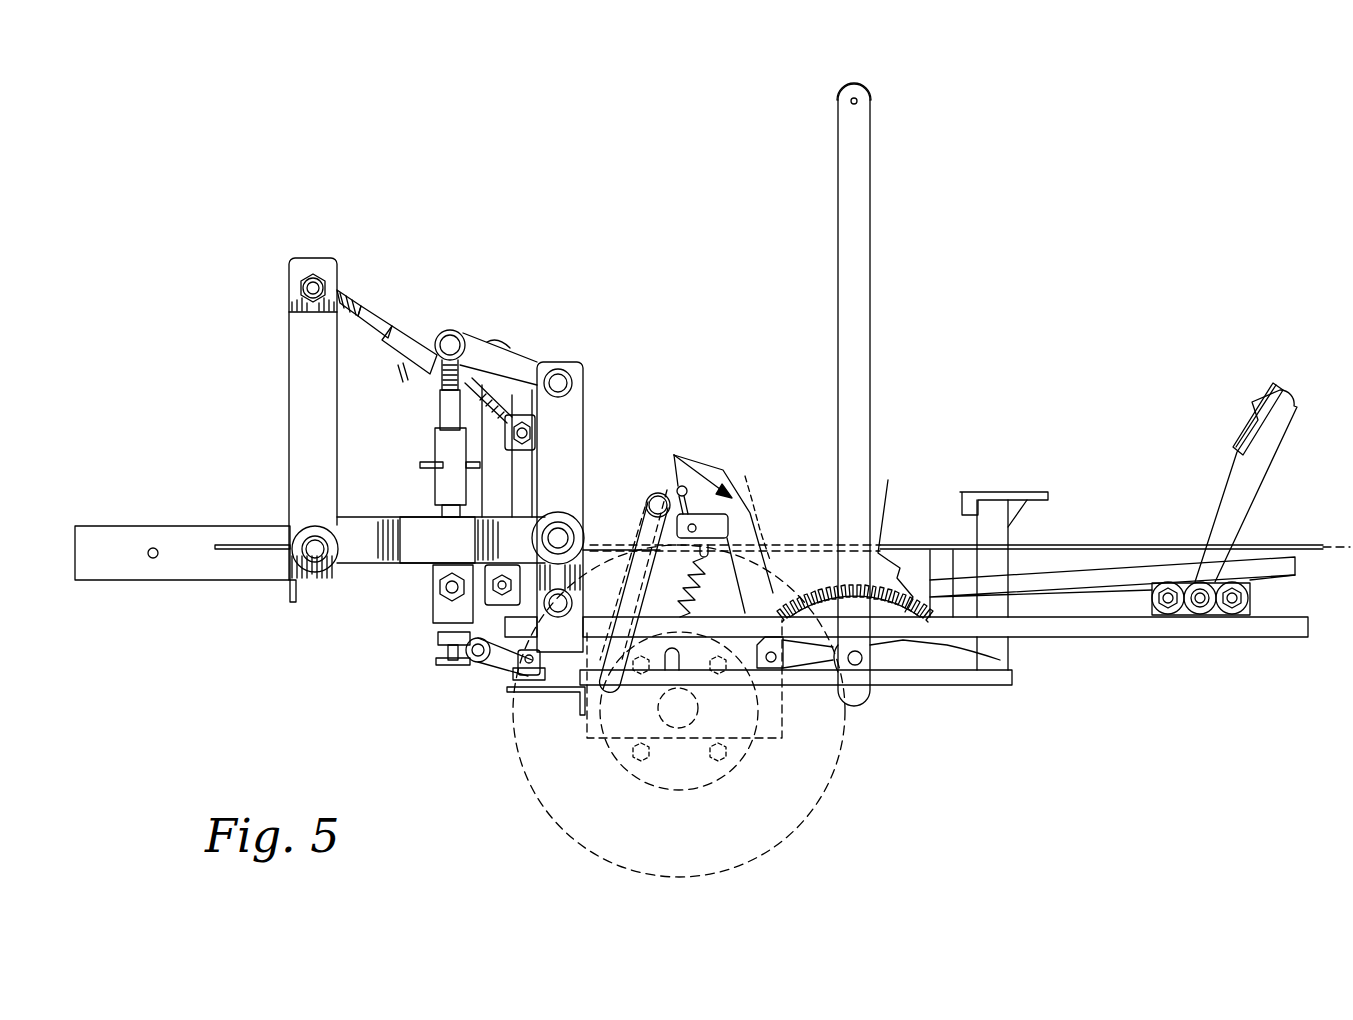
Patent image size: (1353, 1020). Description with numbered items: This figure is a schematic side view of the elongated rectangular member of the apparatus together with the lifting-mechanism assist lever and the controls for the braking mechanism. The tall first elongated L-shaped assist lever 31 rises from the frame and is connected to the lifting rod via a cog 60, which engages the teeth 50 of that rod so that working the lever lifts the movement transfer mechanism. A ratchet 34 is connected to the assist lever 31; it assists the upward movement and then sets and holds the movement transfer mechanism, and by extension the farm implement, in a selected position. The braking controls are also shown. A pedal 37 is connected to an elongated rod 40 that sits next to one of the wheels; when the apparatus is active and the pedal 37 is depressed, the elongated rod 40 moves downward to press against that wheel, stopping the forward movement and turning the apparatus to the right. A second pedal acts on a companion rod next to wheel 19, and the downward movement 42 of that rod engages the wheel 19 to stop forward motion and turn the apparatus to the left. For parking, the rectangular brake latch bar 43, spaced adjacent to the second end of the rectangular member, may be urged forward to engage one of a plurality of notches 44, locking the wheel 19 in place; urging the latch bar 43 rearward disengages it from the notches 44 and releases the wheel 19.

The wheel 19 is at (833, 772).
The first elongated L-shaped assist lever 31 is at (872, 141).
The ratchet 34 is at (945, 603).
The pedal 37 is at (985, 490).
The elongated rod 40 is at (652, 497).
The downward movement 42 is at (745, 476).
The rectangular brake latch bar 43 is at (676, 462).
The notches 44 is at (889, 482).
The teeth 50 is at (903, 660).
The cog 60 is at (880, 670).